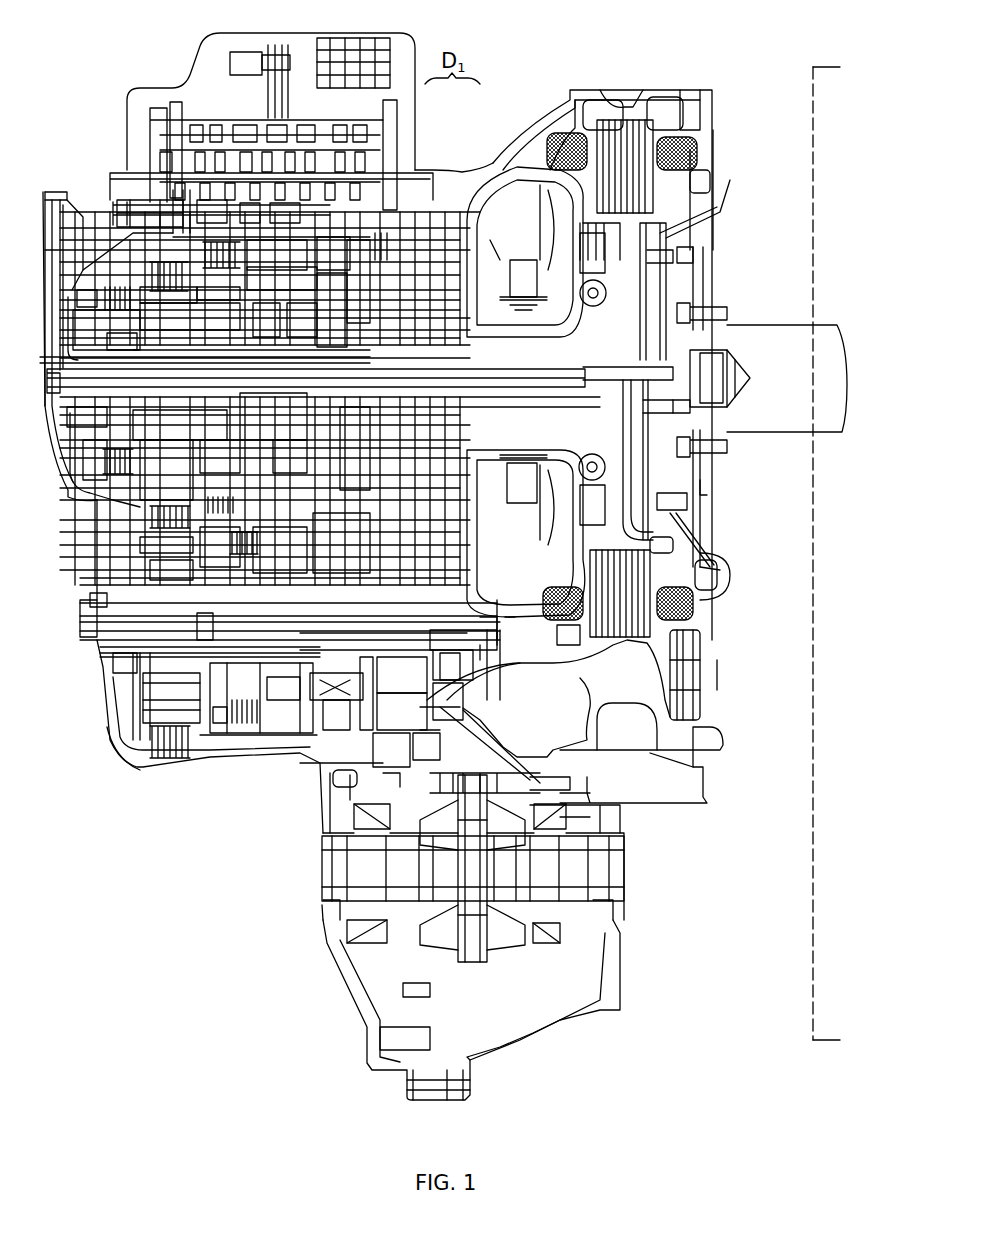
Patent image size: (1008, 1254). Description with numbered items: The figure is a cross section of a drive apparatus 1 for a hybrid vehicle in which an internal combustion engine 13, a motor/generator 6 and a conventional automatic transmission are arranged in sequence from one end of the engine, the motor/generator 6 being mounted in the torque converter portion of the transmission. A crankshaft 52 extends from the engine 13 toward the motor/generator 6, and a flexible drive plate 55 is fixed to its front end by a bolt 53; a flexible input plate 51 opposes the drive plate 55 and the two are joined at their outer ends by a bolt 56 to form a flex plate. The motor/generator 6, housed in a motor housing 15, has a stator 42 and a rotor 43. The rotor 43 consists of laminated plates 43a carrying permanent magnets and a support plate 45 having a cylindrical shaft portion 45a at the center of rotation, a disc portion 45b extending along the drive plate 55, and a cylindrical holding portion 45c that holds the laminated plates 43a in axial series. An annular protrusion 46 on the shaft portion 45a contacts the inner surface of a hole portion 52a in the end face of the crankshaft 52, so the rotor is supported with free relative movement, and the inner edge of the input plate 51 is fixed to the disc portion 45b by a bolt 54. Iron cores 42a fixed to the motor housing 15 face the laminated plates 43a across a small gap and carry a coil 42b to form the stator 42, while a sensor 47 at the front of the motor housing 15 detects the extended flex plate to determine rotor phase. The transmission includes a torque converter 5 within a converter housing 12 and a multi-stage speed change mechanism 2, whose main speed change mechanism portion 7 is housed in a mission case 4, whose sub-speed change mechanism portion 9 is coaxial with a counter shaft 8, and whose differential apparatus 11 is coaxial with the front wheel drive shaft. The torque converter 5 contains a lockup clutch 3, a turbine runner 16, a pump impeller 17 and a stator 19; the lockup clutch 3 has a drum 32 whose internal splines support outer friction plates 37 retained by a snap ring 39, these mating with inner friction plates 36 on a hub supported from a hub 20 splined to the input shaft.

The drive apparatus 1 is at (185, 975).
The multi-stage speed change mechanism 2 is at (417, 168).
The lockup clutch 3 is at (535, 510).
The mission case 4 is at (190, 775).
The torque converter 5 is at (493, 163).
The motor/generator 6 is at (640, 113).
The main speed change mechanism portion 7 is at (66, 503).
The counter shaft 8 is at (97, 660).
The sub-speed change mechanism portion 9 is at (110, 740).
The differential apparatus 11 is at (325, 961).
The converter housing 12 is at (566, 100).
The internal combustion engine 13 is at (813, 1040).
The motor housing 15 is at (690, 92).
The turbine runner 16 is at (557, 633).
The pump impeller 17 is at (512, 630).
The stator 19 is at (483, 480).
The hub 20 is at (518, 390).
The drum 32 is at (557, 527).
The inner friction plates 36 is at (535, 305).
The outer friction plates 37 is at (575, 250).
The snap ring 39 is at (527, 253).
The stator 42 is at (707, 633).
The iron cores 42a is at (620, 640).
The coil 42b is at (563, 622).
The rotor 43 is at (700, 183).
The laminated plates 43a is at (550, 133).
The support plate 45 is at (693, 267).
The shaft portion 45a is at (740, 375).
The disc portion 45b is at (703, 490).
The holding portion 45c is at (700, 157).
The annular protrusion 46 is at (717, 410).
The sensor 47 is at (717, 673).
The input plate 51 is at (703, 537).
The crankshaft 52 is at (822, 432).
The hole portion 52a is at (742, 383).
The bolt 53 is at (723, 313).
The bolt 54 is at (697, 243).
The drive plate 55 is at (722, 545).
The bolt 56 is at (730, 600).